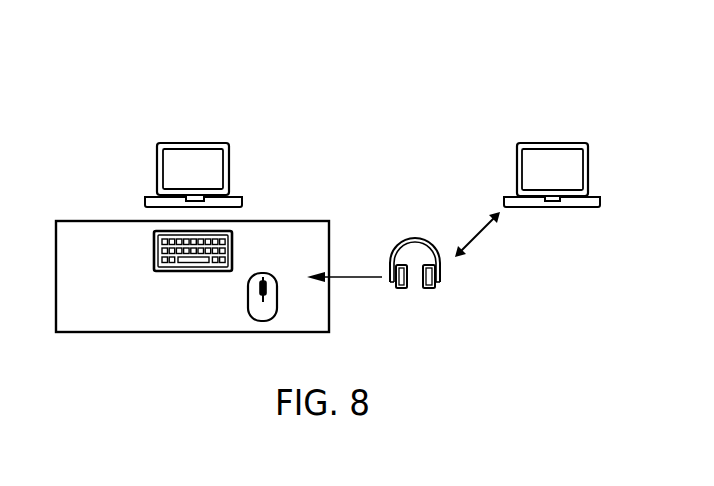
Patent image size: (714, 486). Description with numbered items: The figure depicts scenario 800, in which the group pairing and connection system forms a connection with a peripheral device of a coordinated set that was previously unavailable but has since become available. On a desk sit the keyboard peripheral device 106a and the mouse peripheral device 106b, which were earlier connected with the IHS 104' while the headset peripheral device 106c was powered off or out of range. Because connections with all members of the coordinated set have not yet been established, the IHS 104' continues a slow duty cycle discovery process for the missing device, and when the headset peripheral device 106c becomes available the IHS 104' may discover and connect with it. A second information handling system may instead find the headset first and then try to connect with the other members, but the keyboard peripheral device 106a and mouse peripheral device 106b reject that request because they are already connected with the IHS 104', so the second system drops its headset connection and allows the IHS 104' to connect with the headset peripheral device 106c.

The scenario 800 is at (92, 82).
The IHS 104' is at (212, 156).
The keyboard peripheral device 106a is at (232, 236).
The mouse peripheral device 106b is at (277, 283).
The headset peripheral device 106c is at (436, 272).